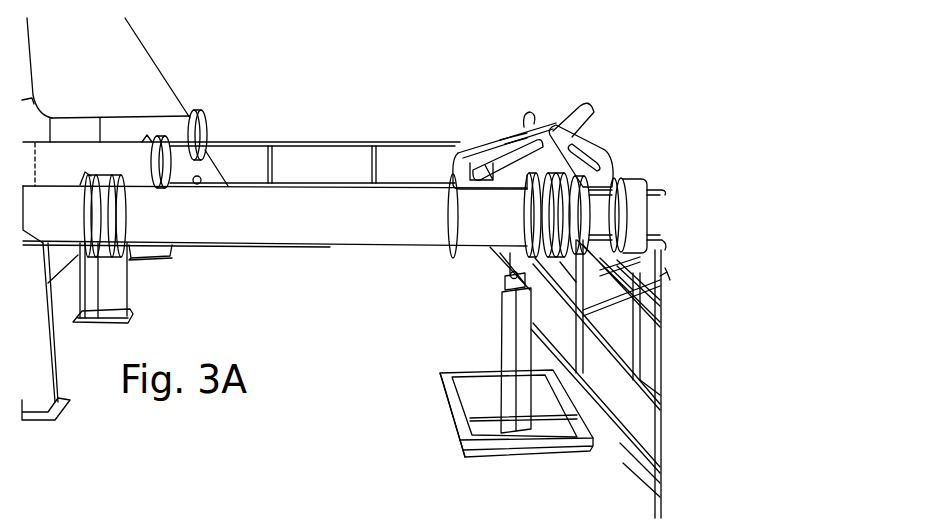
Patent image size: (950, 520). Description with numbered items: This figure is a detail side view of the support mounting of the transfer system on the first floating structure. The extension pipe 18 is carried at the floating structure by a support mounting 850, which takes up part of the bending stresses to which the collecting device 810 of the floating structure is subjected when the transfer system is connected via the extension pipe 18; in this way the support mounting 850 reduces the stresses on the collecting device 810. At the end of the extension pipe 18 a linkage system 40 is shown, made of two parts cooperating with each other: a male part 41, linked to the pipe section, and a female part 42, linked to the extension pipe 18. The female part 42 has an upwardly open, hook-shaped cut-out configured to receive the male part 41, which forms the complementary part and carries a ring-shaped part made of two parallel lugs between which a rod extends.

The extension pipe 18 is at (323, 204).
The linkage system 40 is at (556, 134).
The male part 41 is at (596, 155).
The female part 42 is at (490, 145).
The collecting device 810 is at (110, 250).
The support mounting 850 is at (565, 350).